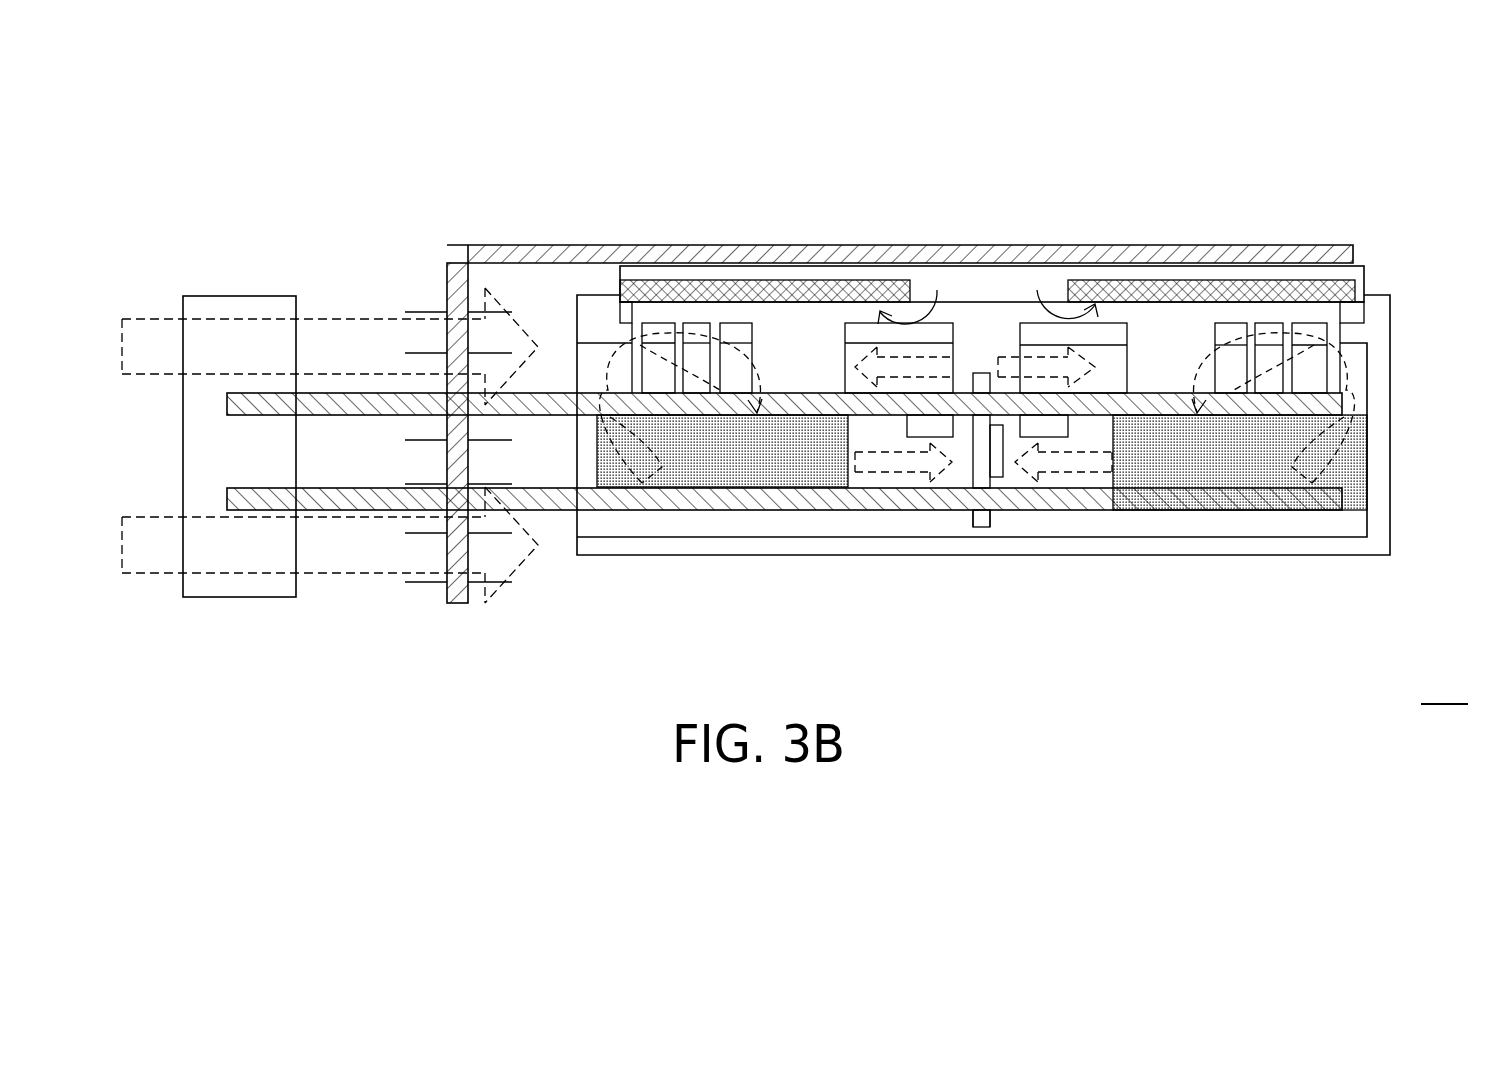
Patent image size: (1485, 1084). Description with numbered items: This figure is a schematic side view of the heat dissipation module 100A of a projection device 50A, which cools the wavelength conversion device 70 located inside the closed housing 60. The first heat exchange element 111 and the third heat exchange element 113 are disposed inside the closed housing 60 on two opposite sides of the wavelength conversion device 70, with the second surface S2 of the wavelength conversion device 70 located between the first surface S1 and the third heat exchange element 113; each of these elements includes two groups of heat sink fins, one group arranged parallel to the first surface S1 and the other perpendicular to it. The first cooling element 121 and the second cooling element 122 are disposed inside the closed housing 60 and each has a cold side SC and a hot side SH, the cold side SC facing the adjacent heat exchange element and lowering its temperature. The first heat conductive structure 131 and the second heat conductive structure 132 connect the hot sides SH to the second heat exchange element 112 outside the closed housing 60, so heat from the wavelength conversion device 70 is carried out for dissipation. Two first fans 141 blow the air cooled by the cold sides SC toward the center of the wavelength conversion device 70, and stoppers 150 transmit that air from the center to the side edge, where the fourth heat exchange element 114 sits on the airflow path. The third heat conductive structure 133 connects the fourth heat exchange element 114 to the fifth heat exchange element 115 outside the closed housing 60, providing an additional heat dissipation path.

The heat dissipation module 100A is at (162, 184).
The fifth heat exchange element 115 is at (238, 296).
The third heat conductive structure 133 is at (332, 497).
The second heat exchange element 112 is at (415, 312).
The first heat conductive structure 131 is at (586, 250).
The first heat exchange element 111 is at (727, 320).
The hot side SH is at (788, 277).
The first cooling element 121 is at (862, 297).
The cold side SC is at (937, 290).
The wavelength conversion device 70 is at (981, 377).
The second heat conductive structure 132 is at (1133, 280).
The second cooling element 122 is at (1253, 280).
The third heat exchange element 113 is at (1338, 318).
The closed housing 60 is at (1380, 307).
The fourth heat exchange element 114 is at (1360, 362).
The first fan 141 is at (741, 466).
The stopper 150 is at (918, 428).
The first surface S1 is at (957, 522).
The second surface S2 is at (993, 522).
The projection device 50A is at (1444, 688).